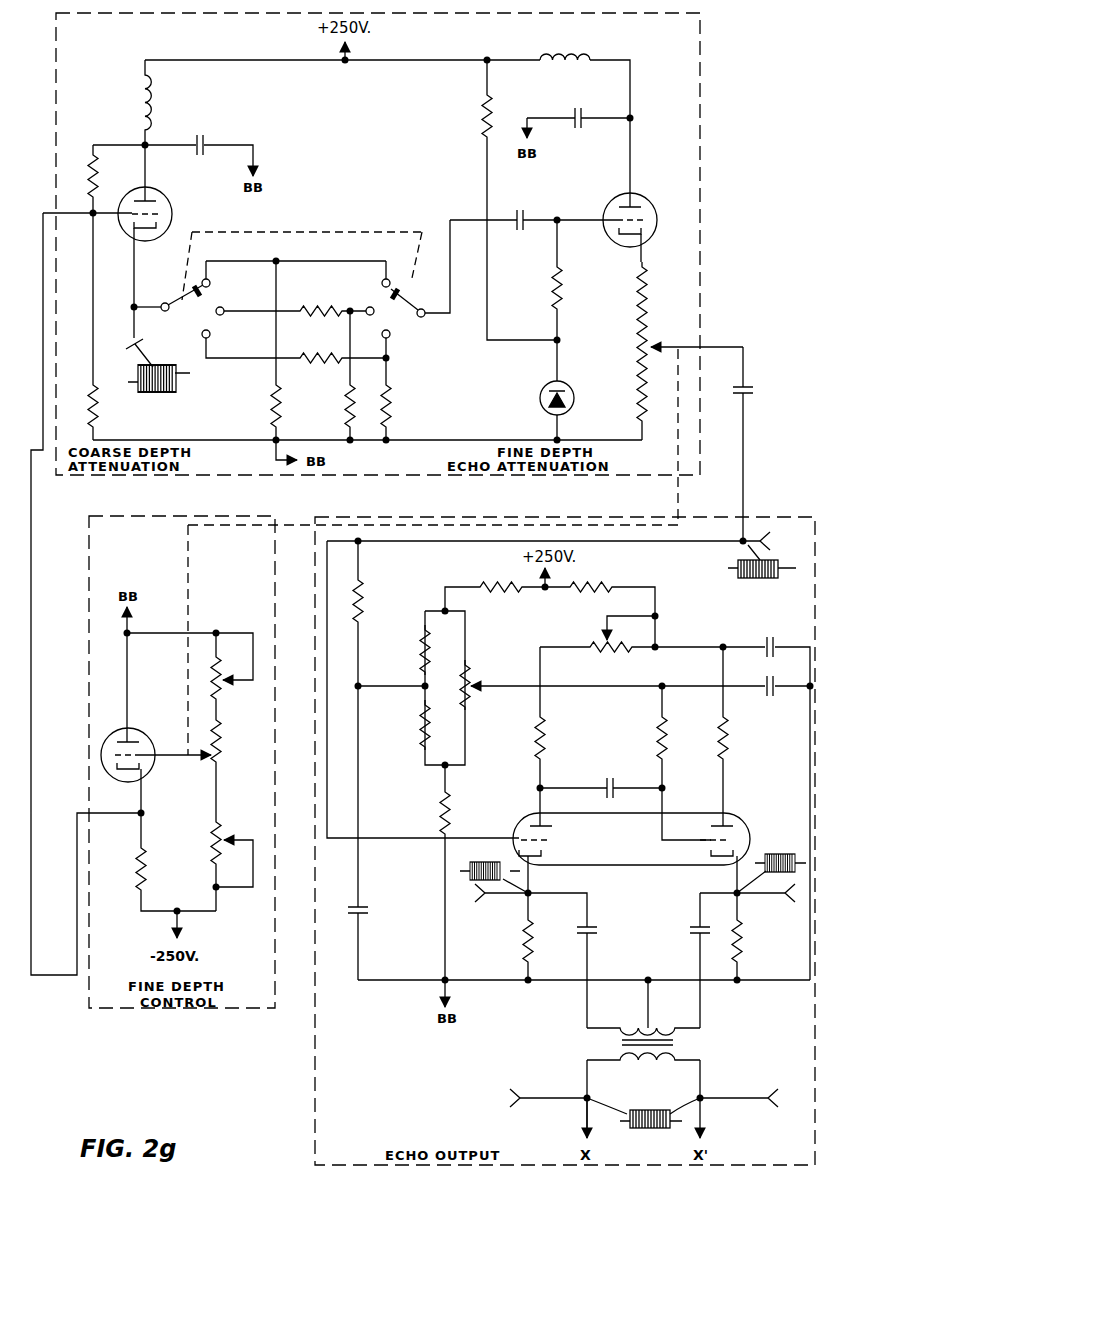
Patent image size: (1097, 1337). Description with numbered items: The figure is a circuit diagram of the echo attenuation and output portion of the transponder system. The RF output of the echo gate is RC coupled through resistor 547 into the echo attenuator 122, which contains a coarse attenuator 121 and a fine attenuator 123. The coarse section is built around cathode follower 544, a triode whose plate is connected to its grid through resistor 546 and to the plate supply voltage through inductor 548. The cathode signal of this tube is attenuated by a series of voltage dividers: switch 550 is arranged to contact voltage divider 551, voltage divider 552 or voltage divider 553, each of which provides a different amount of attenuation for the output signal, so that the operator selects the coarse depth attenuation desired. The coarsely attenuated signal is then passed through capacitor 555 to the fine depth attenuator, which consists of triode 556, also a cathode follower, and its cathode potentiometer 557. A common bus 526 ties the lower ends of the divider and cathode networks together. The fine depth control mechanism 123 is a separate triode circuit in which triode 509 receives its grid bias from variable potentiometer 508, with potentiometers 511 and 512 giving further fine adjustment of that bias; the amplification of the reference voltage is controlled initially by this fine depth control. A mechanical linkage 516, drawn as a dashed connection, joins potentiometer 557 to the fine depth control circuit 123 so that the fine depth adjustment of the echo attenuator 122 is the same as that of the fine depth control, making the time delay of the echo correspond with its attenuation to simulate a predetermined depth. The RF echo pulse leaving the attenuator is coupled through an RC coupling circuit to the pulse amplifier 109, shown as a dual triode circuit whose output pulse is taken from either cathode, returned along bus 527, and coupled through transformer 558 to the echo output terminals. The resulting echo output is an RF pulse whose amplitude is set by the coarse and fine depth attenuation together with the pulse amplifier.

The echo attenuator 122 is at (704, 58).
The inductor 548 is at (143, 97).
The resistor 546 is at (93, 157).
The cathode follower 544 is at (156, 189).
The switch 550 is at (369, 232).
The voltage divider 551 is at (315, 259).
The voltage divider 552 is at (311, 310).
The voltage divider 553 is at (311, 356).
The capacitor 555 is at (528, 221).
The cathode follower 556 is at (651, 199).
The cathode potentiometer 557 is at (690, 346).
The resistor 547 is at (97, 396).
The ground bus 526 is at (224, 438).
The coarse attenuator 121 is at (218, 477).
The mechanical linkage 516 is at (397, 525).
The fine depth control mechanism 123 is at (89, 546).
The triode 509 is at (143, 731).
The potentiometer 511 is at (242, 683).
The variable potentiometer 508 is at (223, 745).
The potentiometer 512 is at (243, 834).
The pulse amplifier 109 is at (815, 592).
The output bus 527 is at (765, 988).
The transformer 558 is at (693, 1047).